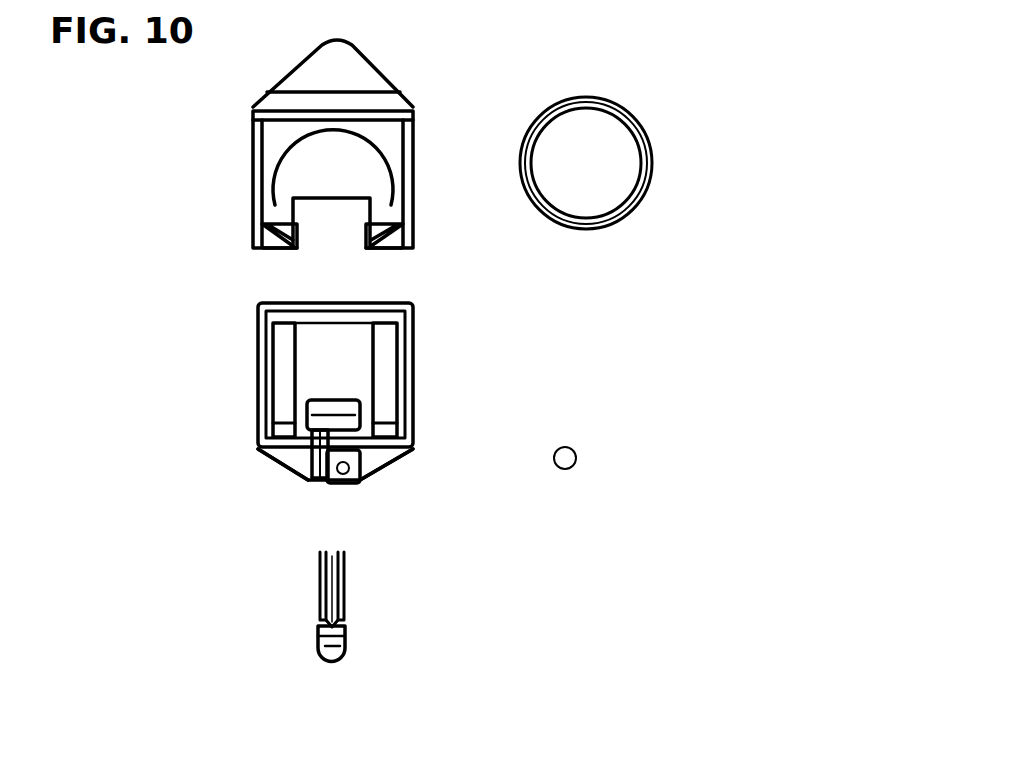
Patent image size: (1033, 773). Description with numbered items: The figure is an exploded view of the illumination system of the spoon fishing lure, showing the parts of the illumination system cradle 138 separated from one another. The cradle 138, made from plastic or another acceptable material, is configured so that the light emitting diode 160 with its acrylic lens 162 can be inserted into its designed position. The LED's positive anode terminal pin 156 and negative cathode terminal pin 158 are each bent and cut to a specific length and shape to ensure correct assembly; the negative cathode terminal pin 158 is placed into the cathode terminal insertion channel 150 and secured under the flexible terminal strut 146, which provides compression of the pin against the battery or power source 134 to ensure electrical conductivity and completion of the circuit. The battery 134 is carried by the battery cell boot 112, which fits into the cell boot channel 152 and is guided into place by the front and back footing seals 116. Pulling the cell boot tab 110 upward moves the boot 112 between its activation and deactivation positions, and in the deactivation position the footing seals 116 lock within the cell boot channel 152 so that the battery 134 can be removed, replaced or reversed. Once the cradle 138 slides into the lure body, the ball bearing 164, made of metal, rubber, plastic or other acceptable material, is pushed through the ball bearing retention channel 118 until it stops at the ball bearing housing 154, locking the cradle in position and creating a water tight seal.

The cell boot tab 110 is at (330, 69).
The battery cell boot 112 is at (265, 108).
The footing seals 116 is at (258, 243).
The battery or power source 134 is at (583, 163).
The illumination system cradle 138 is at (333, 370).
The flexible terminal strut 146 is at (310, 414).
The cathode terminal insertion channel 150 is at (305, 452).
The cell boot channel 152 is at (285, 340).
The ball bearing housing 154 is at (360, 482).
The ball bearing retention channel 118 is at (360, 470).
The ball bearing 164 is at (576, 458).
The positive anode terminal pin 156 is at (345, 600).
The negative cathode terminal pin 158 is at (318, 568).
The light emitting diode 160 is at (345, 645).
The acrylic lens 162 is at (320, 653).